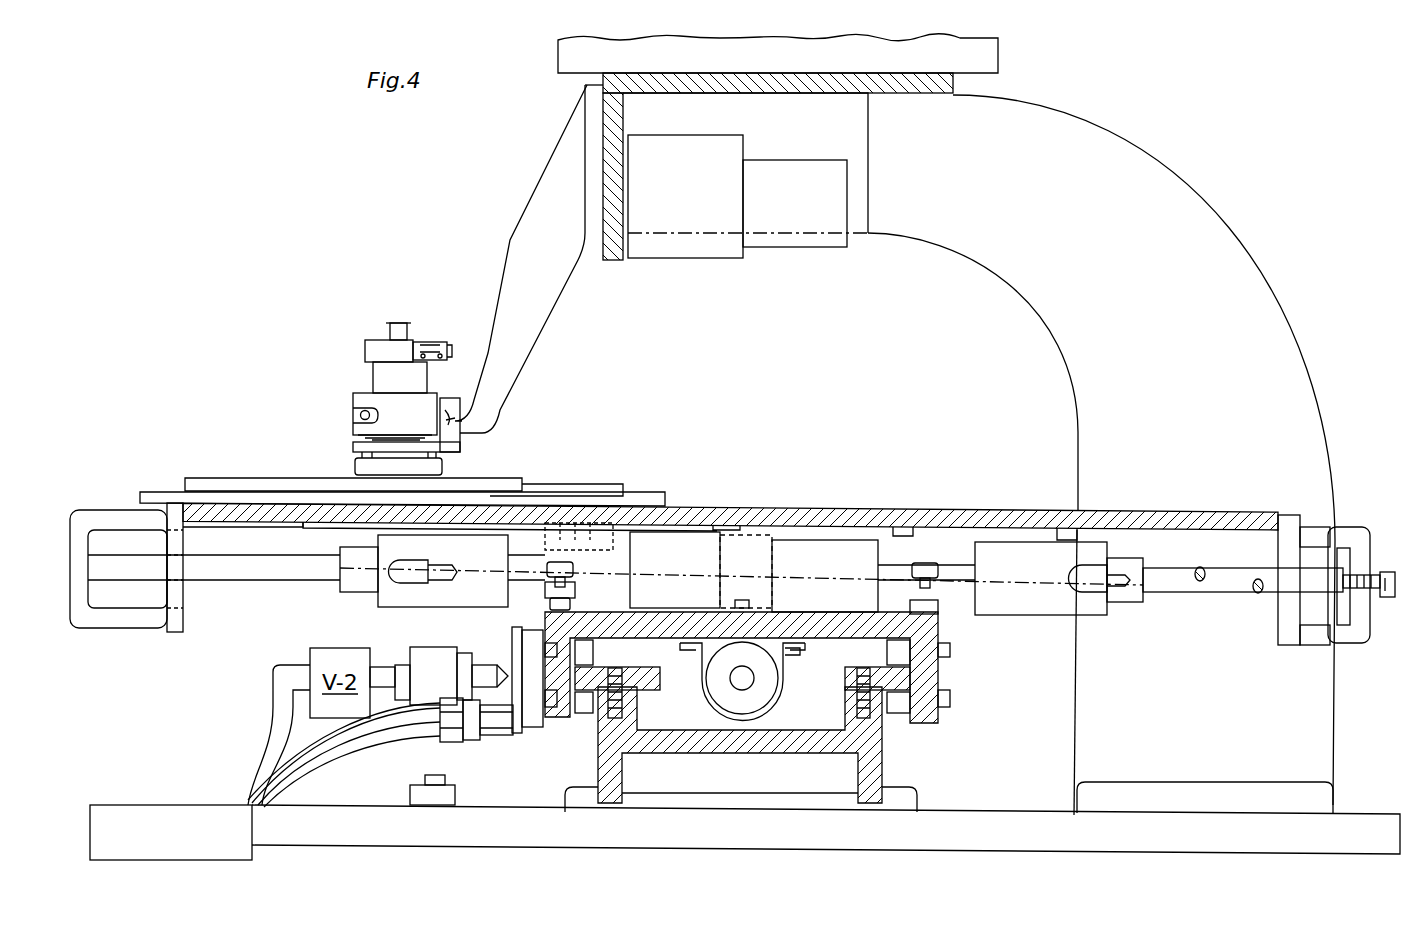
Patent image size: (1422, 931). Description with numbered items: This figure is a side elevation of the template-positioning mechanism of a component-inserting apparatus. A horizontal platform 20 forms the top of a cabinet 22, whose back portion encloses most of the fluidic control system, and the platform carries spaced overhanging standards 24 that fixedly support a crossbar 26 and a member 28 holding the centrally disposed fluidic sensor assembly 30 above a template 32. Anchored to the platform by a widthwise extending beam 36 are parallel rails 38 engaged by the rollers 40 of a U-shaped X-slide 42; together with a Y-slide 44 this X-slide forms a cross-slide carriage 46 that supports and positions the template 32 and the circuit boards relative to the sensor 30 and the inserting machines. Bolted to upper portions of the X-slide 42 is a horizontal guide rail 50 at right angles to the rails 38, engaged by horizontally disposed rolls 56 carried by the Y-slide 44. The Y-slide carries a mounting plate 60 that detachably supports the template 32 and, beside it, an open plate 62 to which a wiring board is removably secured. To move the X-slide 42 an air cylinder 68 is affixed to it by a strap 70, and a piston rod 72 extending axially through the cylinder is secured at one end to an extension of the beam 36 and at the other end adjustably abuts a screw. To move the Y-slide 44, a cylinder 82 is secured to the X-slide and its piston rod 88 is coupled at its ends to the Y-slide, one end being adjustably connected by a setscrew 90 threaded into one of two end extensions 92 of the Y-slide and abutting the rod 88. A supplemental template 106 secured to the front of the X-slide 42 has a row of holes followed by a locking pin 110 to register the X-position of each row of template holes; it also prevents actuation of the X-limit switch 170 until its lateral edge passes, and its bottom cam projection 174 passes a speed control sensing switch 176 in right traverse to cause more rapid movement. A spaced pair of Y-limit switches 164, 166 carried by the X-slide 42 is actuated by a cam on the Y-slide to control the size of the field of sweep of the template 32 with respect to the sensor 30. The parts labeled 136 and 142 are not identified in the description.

The horizontal platform 20 is at (992, 818).
The cabinet 22 is at (90, 855).
The overhanging standard 24 is at (1051, 342).
The crossbar 26 is at (612, 262).
The member 28 is at (553, 319).
The fluidic sensor assembly 30 is at (314, 409).
The template 32 is at (297, 480).
The beam 36 is at (882, 763).
The rail 38 is at (648, 697).
The roller 40 is at (592, 657).
The X-slide 42 is at (860, 612).
The Y-slide 44 is at (803, 505).
The cross-slide carriage 46 is at (266, 639).
The horizontal guide rail 50 is at (590, 562).
The horizontally disposed roll 56 is at (573, 569).
The mounting plate 60 is at (660, 500).
The open plate 62 is at (572, 483).
The air cylinder 68 is at (800, 654).
The strap 70 is at (776, 662).
The piston rod 72 is at (732, 687).
The cylinder 82 is at (1093, 617).
The piston rod 88 is at (1255, 592).
The setscrew 90 is at (1392, 570).
The end extension 92 is at (115, 630).
The supplemental template 106 is at (520, 628).
The locking pin 110 is at (490, 667).
The plate 136 is at (443, 468).
The mounting plate 142 is at (470, 434).
The Y-limit switch 164 is at (600, 543).
The Y-limit switch 166 is at (549, 542).
The X-limit switch 170 is at (513, 707).
The bottom cam projection 174 is at (517, 735).
The speed control sensing switch 176 is at (497, 740).